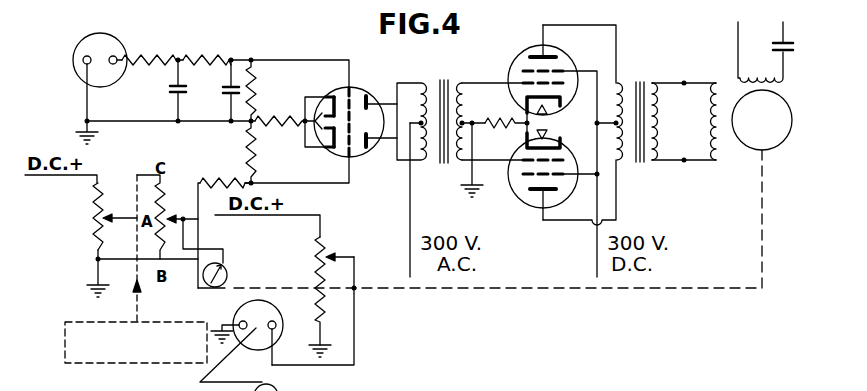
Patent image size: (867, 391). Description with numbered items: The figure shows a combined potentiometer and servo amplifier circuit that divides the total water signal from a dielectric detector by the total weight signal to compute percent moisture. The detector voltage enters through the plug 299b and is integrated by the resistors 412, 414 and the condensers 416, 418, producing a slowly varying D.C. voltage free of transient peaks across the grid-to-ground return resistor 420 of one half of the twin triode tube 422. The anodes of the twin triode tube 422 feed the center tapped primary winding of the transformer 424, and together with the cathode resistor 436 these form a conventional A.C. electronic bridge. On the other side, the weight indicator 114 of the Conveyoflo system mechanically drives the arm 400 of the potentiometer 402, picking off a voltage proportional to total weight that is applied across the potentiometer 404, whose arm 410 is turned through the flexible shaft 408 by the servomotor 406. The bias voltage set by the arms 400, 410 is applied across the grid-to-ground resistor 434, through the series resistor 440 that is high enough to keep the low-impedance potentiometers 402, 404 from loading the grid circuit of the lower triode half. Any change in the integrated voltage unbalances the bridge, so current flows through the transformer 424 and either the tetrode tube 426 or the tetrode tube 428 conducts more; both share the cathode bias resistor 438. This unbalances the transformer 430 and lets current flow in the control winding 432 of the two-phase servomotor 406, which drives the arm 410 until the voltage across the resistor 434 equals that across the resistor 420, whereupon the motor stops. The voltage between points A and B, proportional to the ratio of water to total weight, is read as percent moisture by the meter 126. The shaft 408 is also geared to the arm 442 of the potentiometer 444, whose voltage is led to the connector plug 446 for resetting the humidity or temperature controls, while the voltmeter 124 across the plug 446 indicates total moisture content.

The plug 299b is at (98, 58).
The resistor 412 is at (148, 56).
The resistor 414 is at (217, 57).
The condenser 416 is at (172, 100).
The condenser 418 is at (223, 100).
The grid-to-ground return resistor 420 is at (256, 105).
The twin triode tube 422 is at (361, 92).
The center tapped transformer 424 is at (445, 82).
The tetrode tube 426 is at (523, 55).
The tetrode tube 428 is at (525, 186).
The transformer 430 is at (642, 84).
The control winding 432 is at (712, 142).
The grid-to-ground resistor 434 is at (247, 148).
The cathode resistor 436 is at (280, 128).
The cathode bias resistor 438 is at (497, 111).
The series resistor 440 is at (255, 184).
The arm 442 is at (362, 238).
The potentiometer 444 is at (318, 239).
The connector plug 446 is at (241, 344).
The arm 400 is at (130, 216).
The potentiometer 402 is at (97, 249).
The potentiometer 404 is at (158, 242).
The servomotor 406 is at (773, 136).
The flexible shaft 408 is at (196, 264).
The arm 410 is at (186, 220).
The weight indicator 114 is at (136, 269).
The voltmeter 124 is at (279, 388).
The meter 126 is at (222, 288).